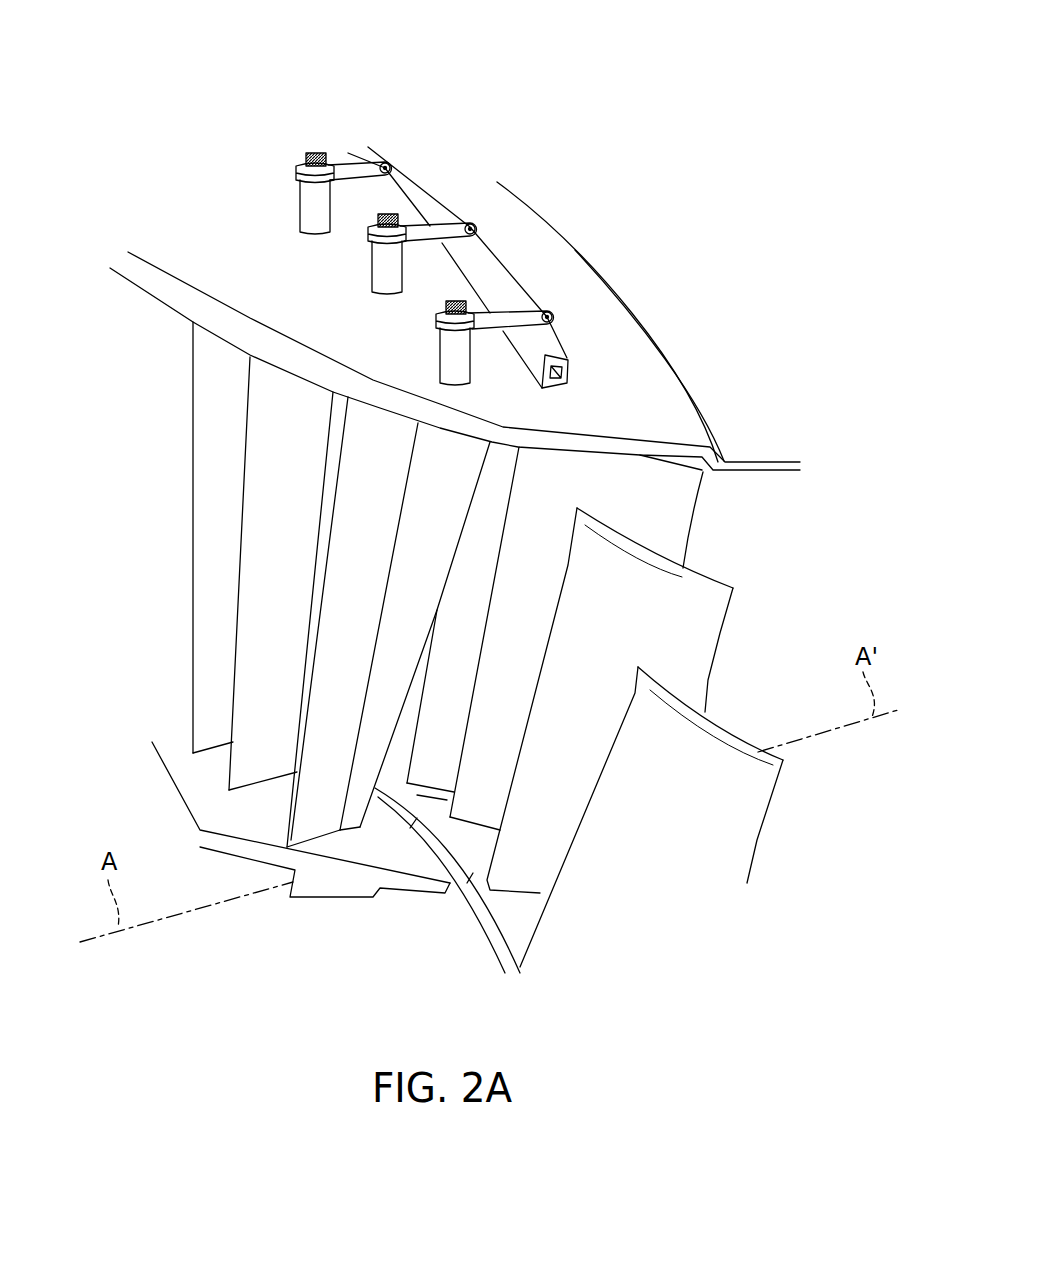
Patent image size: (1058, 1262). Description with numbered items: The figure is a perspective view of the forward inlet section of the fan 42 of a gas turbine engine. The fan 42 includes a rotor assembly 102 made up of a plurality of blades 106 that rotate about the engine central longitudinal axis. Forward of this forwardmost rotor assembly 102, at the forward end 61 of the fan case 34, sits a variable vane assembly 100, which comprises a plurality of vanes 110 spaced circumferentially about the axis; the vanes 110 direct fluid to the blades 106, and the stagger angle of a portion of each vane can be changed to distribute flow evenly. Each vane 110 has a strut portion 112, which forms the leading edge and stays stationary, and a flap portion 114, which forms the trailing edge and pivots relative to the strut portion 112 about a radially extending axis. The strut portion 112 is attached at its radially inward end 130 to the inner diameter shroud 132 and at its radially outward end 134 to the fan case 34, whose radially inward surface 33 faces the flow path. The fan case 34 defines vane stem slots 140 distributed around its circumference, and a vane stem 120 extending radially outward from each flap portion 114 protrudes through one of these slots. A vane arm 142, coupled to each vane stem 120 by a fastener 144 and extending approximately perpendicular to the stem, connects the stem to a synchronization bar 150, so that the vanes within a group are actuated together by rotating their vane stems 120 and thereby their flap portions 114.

The fan 42 is at (203, 128).
The radially inward surface 33 is at (140, 298).
The forward end 61 is at (137, 273).
The fan case 34 is at (598, 317).
The variable vane assembly 100 is at (155, 476).
The rotor assembly 102 is at (752, 553).
The blades 106 is at (670, 510).
The vanes 110 is at (229, 368).
The strut portion 112 is at (237, 437).
The flap portion 114 is at (342, 393).
The vane stem 120 is at (312, 211).
The radially inward end 130 is at (212, 743).
The inner diameter shroud 132 is at (208, 797).
The radially outward end 134 is at (202, 337).
The vane stem slots 140 is at (366, 276).
The vane arm 142 is at (427, 230).
The fastener 144 is at (312, 152).
The synchronization bar 150 is at (403, 187).